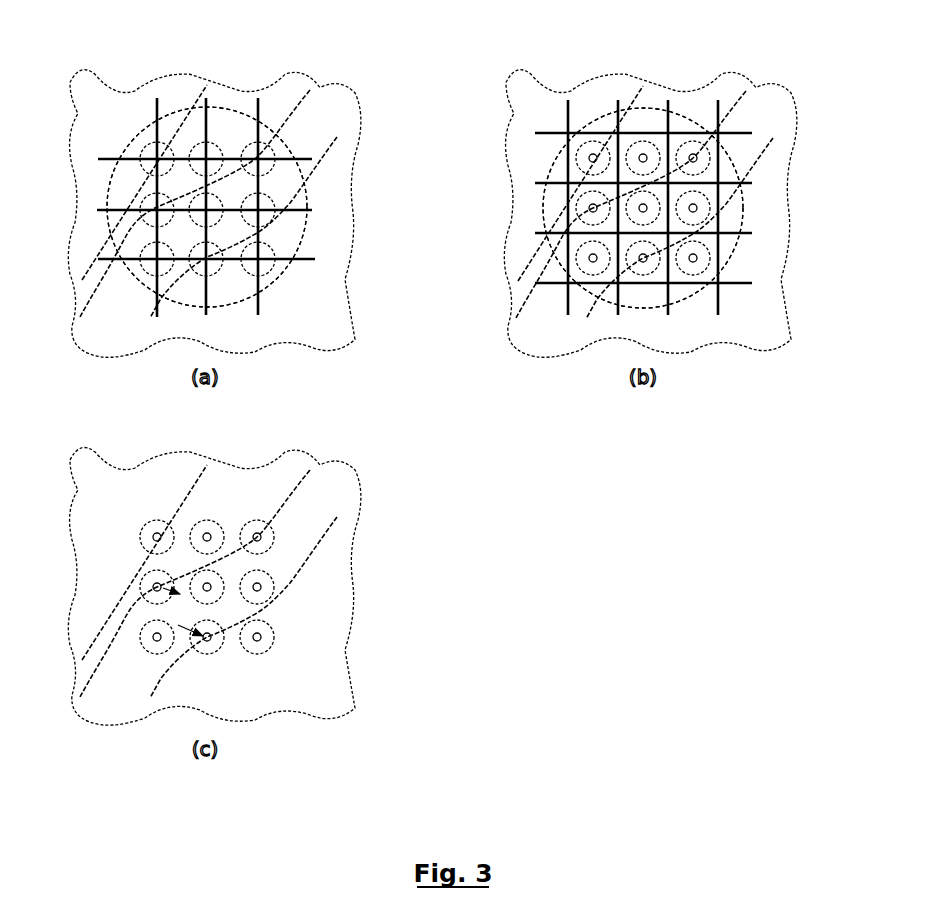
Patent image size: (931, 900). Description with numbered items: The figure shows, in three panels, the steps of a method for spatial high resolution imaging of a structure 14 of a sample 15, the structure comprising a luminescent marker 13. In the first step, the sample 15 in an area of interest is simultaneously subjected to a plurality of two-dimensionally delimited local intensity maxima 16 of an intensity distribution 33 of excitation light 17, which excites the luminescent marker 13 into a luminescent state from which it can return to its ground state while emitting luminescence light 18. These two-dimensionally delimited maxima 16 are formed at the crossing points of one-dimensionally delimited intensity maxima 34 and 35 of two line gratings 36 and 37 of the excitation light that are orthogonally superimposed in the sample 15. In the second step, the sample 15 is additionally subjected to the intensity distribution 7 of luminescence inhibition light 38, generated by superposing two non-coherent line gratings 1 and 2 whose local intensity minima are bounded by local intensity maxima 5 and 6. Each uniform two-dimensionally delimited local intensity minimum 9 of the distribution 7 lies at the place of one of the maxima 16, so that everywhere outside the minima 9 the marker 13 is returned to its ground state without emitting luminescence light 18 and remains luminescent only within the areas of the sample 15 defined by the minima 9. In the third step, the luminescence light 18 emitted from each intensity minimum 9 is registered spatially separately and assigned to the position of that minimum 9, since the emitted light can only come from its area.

The line grating 1 is at (531, 127).
The line grating 2 is at (565, 96).
The local intensity maximum 5 is at (535, 133).
The local intensity maximum 6 is at (622, 107).
The overall intensity distribution 7 is at (557, 119).
The local intensity minima 9 is at (647, 258).
The luminescent marker 13 is at (333, 137).
The structure 14 is at (328, 157).
The sample 15 is at (357, 79).
The local intensity maxima 16 is at (220, 268).
The excitation light 17 is at (313, 206).
The luminescence light 18 is at (142, 516).
The intensity distribution 33 is at (144, 133).
The one-dimensionally delimited intensity maxima 34 is at (100, 162).
The one-dimensionally delimited intensity maxima 35 is at (258, 127).
The line grating 36 is at (87, 160).
The line grating 37 is at (155, 87).
The luminescence inhibition light 38 is at (643, 208).